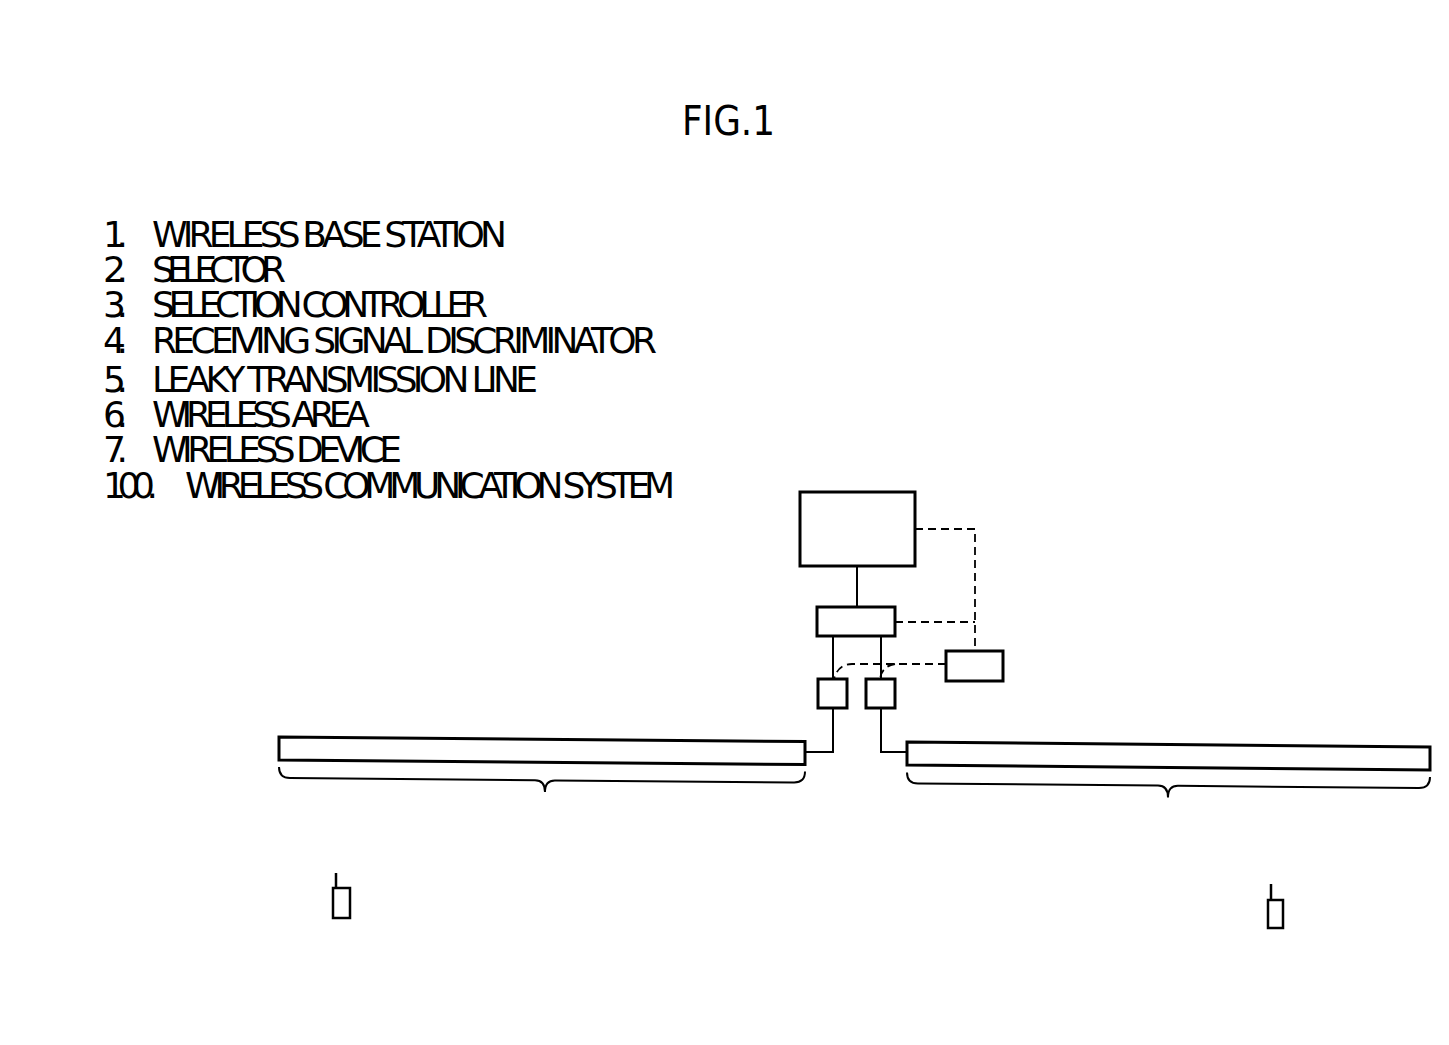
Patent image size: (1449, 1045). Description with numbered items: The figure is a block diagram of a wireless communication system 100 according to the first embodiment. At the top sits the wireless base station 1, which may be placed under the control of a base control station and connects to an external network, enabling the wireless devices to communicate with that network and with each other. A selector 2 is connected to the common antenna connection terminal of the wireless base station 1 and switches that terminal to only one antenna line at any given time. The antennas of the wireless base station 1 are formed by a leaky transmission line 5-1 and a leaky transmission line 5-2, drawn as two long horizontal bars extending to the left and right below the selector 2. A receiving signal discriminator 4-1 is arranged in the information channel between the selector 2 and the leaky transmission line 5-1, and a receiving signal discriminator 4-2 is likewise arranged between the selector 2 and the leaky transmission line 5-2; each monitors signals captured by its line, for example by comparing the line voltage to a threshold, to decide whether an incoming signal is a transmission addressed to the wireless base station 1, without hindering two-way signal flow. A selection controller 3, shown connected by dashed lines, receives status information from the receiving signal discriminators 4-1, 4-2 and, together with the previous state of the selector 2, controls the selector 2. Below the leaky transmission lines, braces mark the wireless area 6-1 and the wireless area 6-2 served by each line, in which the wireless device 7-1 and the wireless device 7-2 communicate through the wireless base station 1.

The wireless base station 1 is at (915, 507).
The selector 2 is at (817, 614).
The selection controller 3 is at (1004, 657).
The receiving signal discriminator 4-1 is at (818, 690).
The receiving signal discriminator 4-2 is at (895, 692).
The leaky transmission line 5-1 is at (440, 737).
The leaky transmission line 5-2 is at (1248, 746).
The wireless area 6-1 is at (542, 800).
The wireless area 6-2 is at (1168, 807).
The wireless device 7-1 is at (350, 903).
The wireless device 7-2 is at (1283, 913).
The wireless communication system 100 is at (1112, 547).